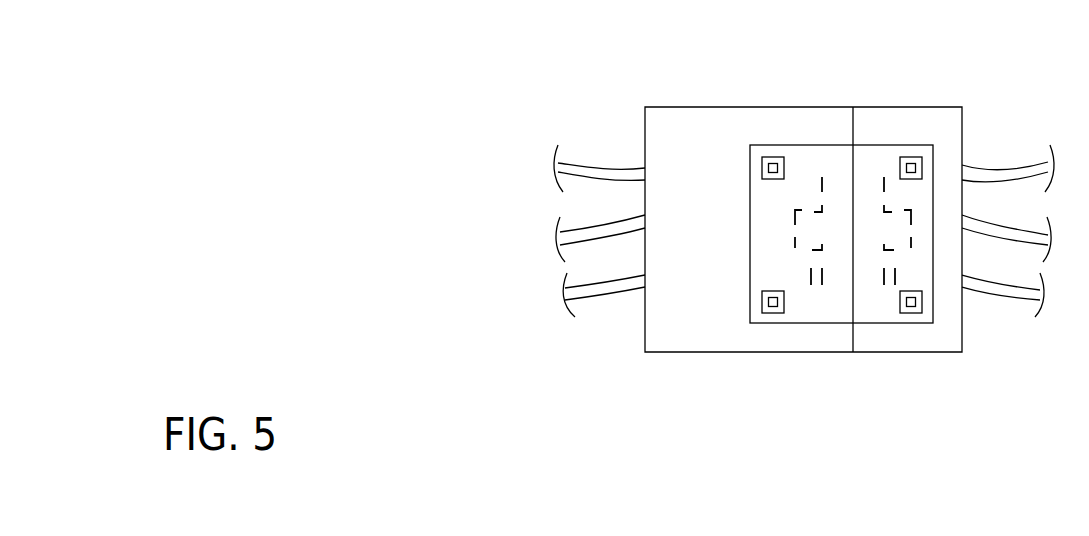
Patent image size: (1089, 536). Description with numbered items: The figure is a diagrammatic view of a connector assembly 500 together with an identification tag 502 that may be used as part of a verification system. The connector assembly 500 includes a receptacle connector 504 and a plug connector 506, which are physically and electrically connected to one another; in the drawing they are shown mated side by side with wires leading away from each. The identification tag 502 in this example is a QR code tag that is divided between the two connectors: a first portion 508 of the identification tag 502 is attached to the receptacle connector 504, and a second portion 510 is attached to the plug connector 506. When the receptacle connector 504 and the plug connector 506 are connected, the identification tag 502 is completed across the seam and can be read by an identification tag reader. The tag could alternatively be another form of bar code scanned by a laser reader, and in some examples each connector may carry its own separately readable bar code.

The connector assembly 500 is at (973, 68).
The identification tag 502 is at (817, 137).
The receptacle connector 504 is at (662, 342).
The plug connector 506 is at (943, 342).
The first portion of the identification tag 508 is at (809, 310).
The second portion of the identification tag 510 is at (885, 310).